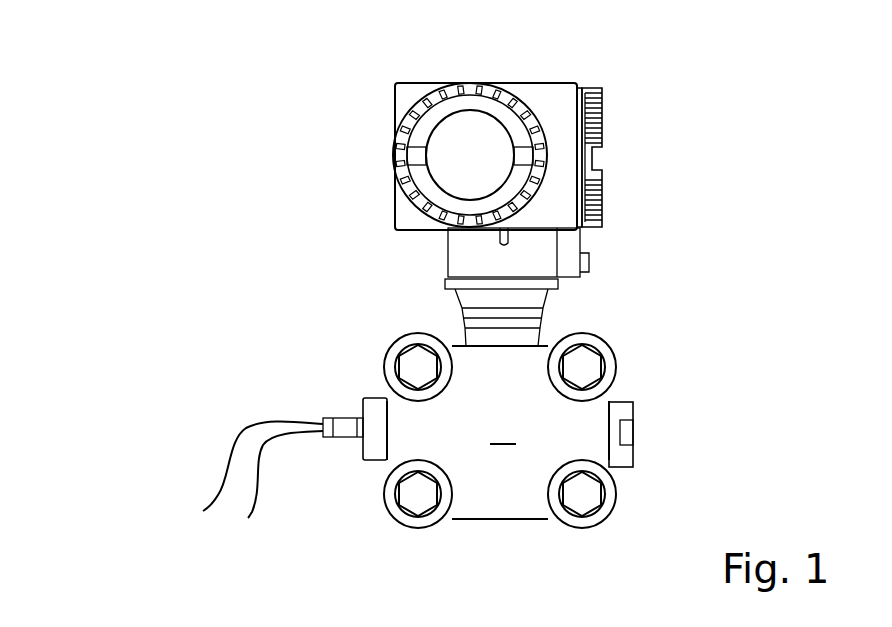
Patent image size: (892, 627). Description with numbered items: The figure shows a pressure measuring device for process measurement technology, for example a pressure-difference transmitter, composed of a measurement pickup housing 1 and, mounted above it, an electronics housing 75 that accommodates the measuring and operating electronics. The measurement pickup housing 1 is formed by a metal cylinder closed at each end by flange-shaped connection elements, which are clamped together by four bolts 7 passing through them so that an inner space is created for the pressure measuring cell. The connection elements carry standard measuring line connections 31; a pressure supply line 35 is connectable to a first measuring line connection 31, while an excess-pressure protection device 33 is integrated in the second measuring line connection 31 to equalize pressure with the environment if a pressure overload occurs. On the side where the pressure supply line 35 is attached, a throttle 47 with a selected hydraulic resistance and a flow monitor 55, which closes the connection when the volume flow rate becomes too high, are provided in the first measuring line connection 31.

The measurement pickup housing 1 is at (363, 332).
The bolts 7 is at (413, 358).
The measuring line connection 31 is at (630, 455).
The excess-pressure protection device 33 is at (630, 430).
The pressure supply line 35 is at (270, 418).
The throttle 47 is at (361, 438).
The flow monitor 55 is at (346, 427).
The electronics housing 75 is at (533, 81).